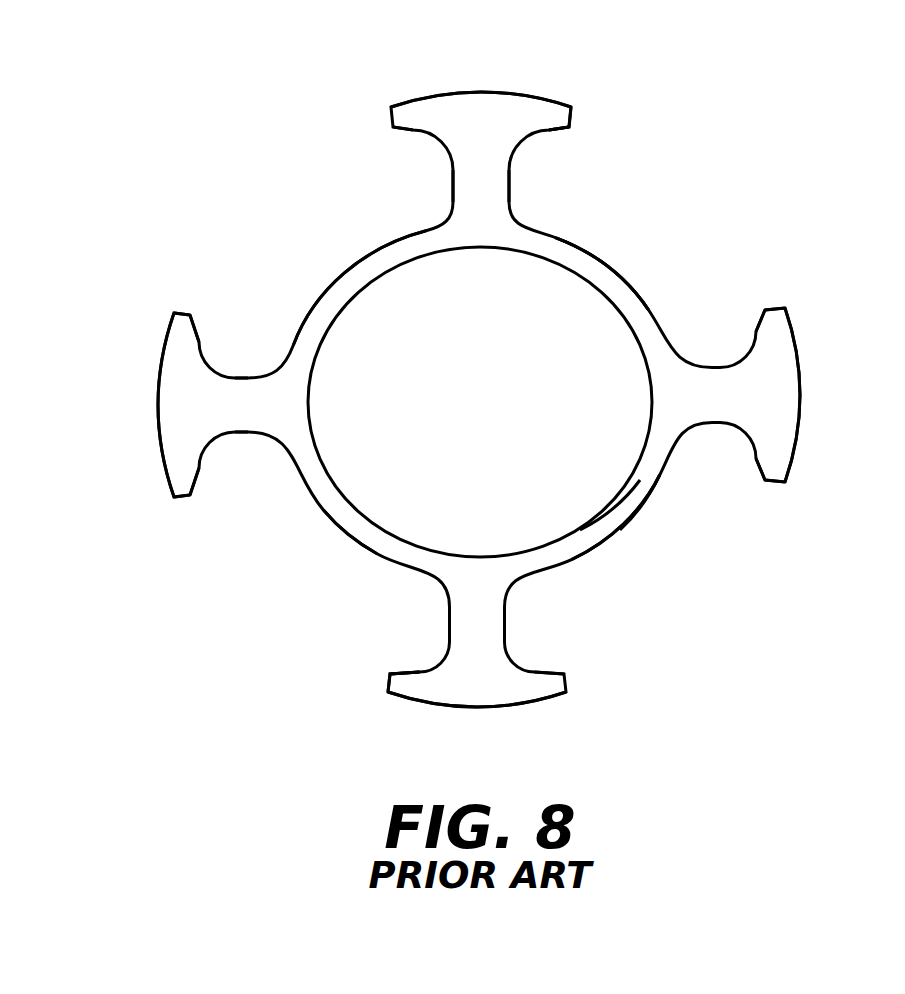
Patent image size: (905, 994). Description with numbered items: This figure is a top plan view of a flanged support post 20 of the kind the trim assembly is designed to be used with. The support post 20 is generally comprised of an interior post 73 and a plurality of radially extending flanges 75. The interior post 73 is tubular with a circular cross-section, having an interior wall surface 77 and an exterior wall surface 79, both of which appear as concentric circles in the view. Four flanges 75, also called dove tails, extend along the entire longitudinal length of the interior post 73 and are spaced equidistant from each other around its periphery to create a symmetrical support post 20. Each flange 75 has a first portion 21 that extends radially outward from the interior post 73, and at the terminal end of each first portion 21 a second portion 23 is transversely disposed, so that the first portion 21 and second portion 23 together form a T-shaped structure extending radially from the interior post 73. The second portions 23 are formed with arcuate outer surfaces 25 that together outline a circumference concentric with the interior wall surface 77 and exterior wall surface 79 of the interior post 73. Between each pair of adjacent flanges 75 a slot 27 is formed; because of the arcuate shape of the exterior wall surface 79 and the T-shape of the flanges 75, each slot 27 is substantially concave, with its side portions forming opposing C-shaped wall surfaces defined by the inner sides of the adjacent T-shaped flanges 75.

The support post 20 is at (766, 157).
The first portion 21 is at (473, 193).
The second portion 23 is at (568, 120).
The arcuate outer surface 25 is at (553, 104).
The slot 27 is at (273, 273).
The interior post 73 is at (633, 307).
The flange 75 is at (488, 120).
The interior wall surface 77 is at (613, 503).
The exterior wall surface 79 is at (633, 510).